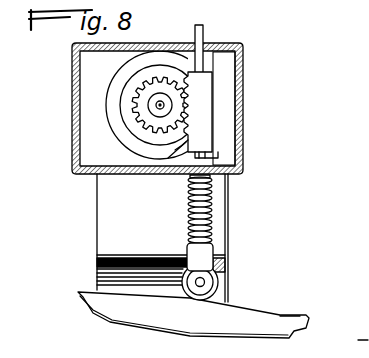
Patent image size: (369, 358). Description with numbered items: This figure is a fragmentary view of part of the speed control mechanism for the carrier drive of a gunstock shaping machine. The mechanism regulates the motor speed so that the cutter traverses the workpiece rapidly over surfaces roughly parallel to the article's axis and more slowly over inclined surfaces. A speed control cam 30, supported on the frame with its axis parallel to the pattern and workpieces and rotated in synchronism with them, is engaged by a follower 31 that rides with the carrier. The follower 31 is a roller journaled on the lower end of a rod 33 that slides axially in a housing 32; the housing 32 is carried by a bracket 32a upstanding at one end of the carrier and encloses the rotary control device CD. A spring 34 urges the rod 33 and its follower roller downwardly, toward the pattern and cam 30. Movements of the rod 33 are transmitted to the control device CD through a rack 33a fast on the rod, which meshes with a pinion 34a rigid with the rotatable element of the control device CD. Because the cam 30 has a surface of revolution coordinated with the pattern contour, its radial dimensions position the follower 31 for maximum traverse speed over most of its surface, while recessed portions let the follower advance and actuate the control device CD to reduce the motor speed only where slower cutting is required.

The speed control cam 30 is at (277, 318).
The follower 31 is at (220, 279).
The housing 32 is at (243, 137).
The bracket 32a is at (108, 232).
The rod 33 is at (203, 35).
The rack 33a is at (186, 141).
The spring 34 is at (215, 212).
The pinion 34a is at (152, 126).
The control device CD is at (72, 142).